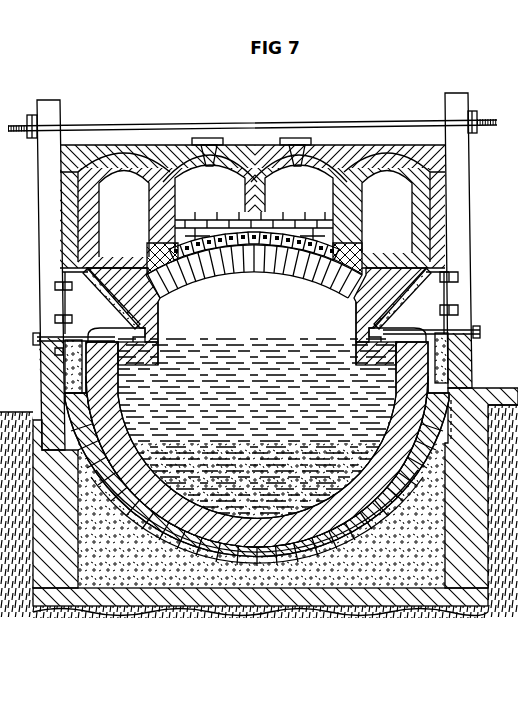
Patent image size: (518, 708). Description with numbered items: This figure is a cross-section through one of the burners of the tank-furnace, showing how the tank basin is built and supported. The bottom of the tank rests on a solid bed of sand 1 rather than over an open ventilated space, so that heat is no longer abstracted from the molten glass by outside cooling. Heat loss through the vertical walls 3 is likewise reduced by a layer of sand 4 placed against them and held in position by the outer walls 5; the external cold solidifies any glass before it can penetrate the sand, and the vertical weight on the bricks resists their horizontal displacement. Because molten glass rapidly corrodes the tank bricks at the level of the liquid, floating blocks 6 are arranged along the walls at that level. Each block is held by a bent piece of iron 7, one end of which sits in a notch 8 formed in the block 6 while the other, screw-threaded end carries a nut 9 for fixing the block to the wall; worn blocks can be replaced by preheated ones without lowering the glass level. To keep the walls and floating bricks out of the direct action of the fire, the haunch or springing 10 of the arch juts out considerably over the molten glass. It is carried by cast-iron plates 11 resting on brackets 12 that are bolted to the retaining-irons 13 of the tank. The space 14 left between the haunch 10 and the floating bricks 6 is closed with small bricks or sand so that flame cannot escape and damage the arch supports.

The bed of sand 1 is at (421, 562).
The vertical walls 3 is at (102, 336).
The layer of sand 4 is at (502, 387).
The outer walls 5 is at (405, 388).
The floating blocks 6 is at (368, 340).
The bent piece of iron 7 is at (437, 328).
The notch 8 is at (455, 355).
The nut 9 is at (481, 333).
The haunch or springing of the arch 10 is at (358, 302).
The cast-iron plates 11 is at (258, 298).
The brackets 12 is at (104, 292).
The retaining-irons 13 is at (256, 271).
The space 14 is at (257, 416).